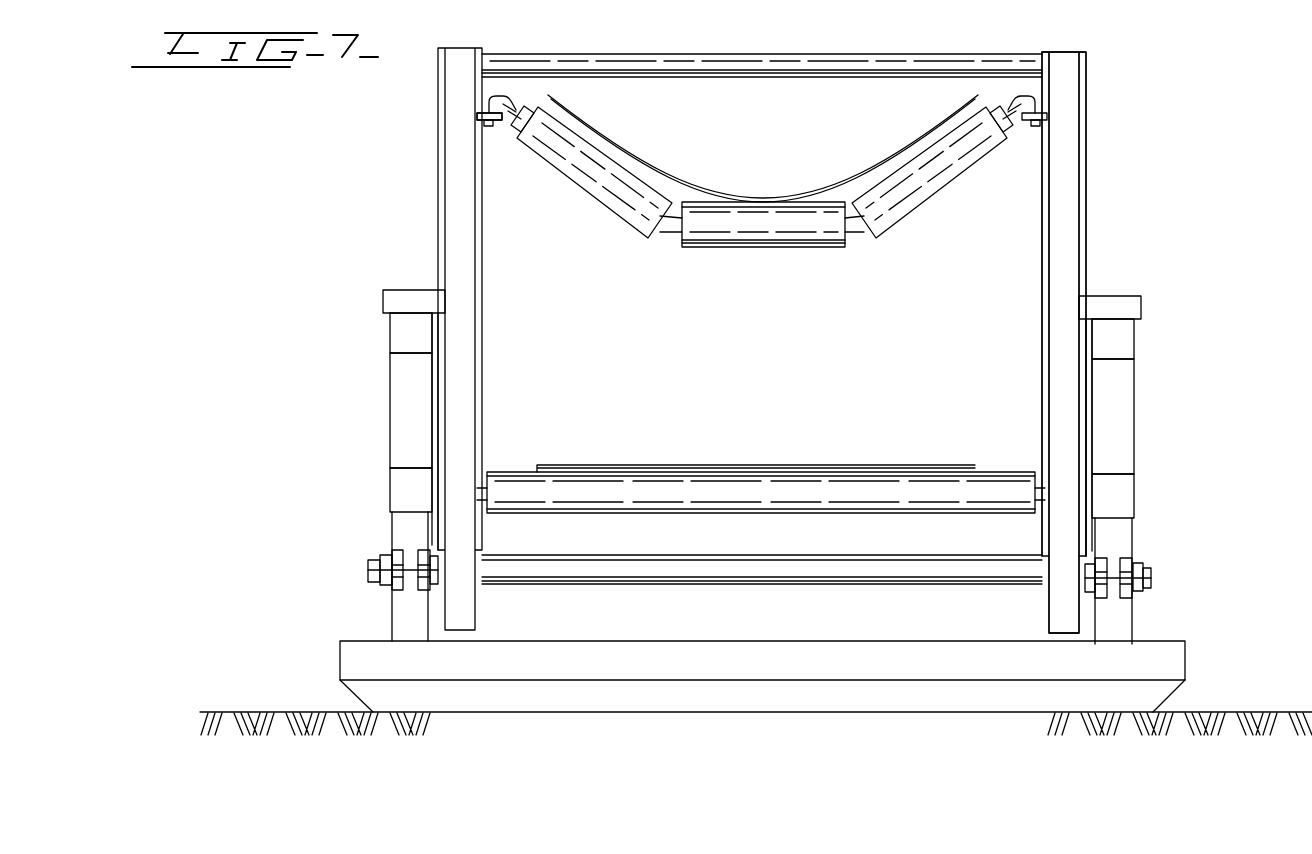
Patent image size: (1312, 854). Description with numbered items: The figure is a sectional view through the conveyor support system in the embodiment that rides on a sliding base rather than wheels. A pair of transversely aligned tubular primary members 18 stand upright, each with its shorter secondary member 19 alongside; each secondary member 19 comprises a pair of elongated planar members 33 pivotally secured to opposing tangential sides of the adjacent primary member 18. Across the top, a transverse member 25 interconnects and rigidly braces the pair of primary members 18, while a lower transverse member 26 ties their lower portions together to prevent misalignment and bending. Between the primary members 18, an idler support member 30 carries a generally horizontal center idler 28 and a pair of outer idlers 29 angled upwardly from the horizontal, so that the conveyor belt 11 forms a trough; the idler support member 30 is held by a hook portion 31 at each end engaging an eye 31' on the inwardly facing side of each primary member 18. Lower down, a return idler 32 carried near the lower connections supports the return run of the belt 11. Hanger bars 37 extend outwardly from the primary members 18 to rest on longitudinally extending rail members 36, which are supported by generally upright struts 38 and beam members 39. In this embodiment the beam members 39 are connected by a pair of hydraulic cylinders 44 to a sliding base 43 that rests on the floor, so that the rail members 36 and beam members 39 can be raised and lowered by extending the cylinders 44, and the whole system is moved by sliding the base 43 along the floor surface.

The conveyor belt 11 is at (745, 177).
The primary elongated member 18 is at (1086, 158).
The secondary elongated member 19 is at (1086, 236).
The transverse member 25 is at (767, 54).
The transverse member 26 is at (692, 584).
The center idler 28 is at (738, 247).
The idler 29 is at (600, 208).
The idler support member 30 is at (672, 232).
The hook portion 31 is at (762, 103).
The eye 31' is at (497, 154).
The return idler 32 is at (606, 513).
The elongated planar member 33 is at (438, 212).
The rail member 36 is at (390, 343).
The hanger bar 37 is at (405, 290).
The upright strut 38 is at (390, 408).
The beam member 39 is at (390, 487).
The sliding base 43 is at (1166, 641).
The hydraulic cylinder 44 is at (392, 535).